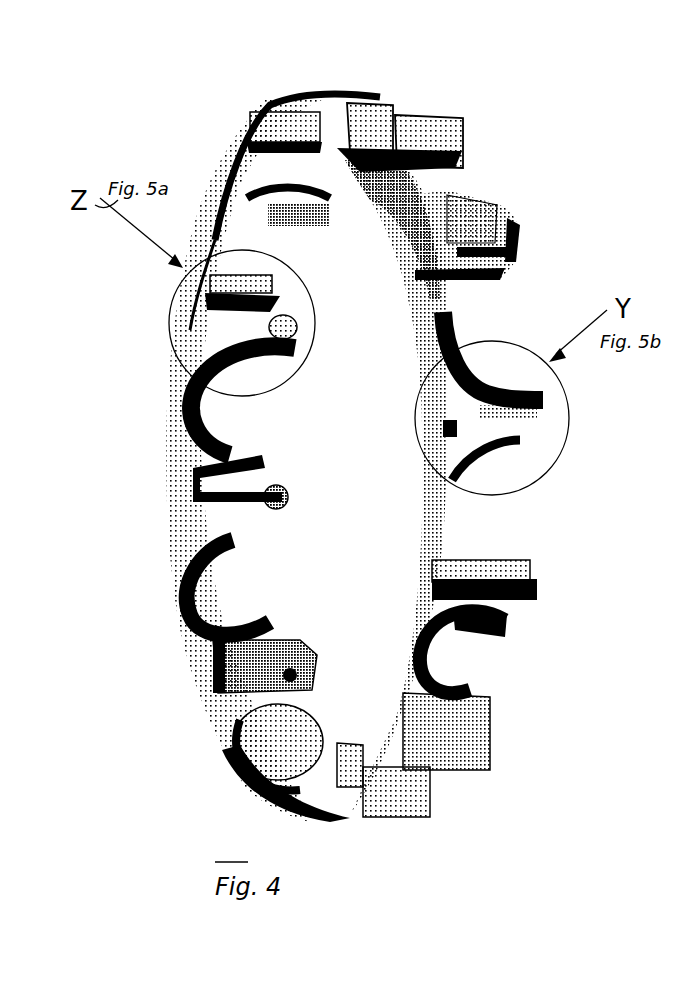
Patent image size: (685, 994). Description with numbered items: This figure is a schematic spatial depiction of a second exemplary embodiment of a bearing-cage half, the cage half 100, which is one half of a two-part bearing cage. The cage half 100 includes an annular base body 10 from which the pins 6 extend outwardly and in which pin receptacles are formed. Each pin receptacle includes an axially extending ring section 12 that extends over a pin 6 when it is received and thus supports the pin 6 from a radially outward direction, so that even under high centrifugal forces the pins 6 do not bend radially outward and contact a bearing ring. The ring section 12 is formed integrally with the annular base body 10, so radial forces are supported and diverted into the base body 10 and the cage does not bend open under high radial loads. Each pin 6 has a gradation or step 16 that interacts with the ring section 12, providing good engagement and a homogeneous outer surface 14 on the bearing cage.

The cage half 100 is at (312, 47).
The annular base body 10 is at (178, 517).
The ring section 12 is at (215, 660).
The outer surface 14 is at (193, 487).
The step 16 is at (272, 492).
The pin 6 is at (307, 647).